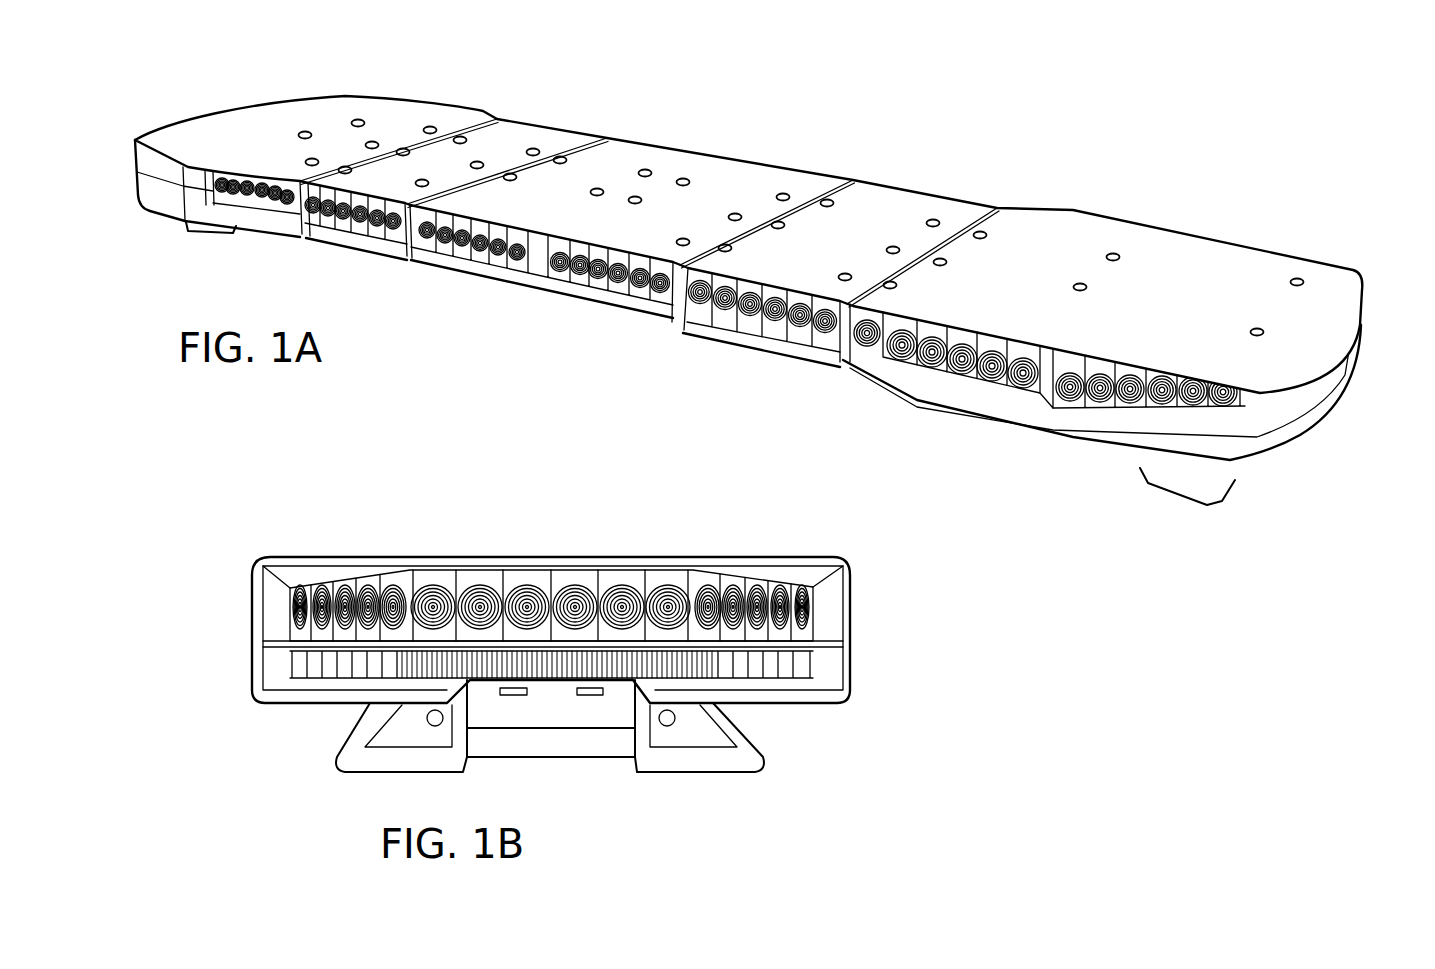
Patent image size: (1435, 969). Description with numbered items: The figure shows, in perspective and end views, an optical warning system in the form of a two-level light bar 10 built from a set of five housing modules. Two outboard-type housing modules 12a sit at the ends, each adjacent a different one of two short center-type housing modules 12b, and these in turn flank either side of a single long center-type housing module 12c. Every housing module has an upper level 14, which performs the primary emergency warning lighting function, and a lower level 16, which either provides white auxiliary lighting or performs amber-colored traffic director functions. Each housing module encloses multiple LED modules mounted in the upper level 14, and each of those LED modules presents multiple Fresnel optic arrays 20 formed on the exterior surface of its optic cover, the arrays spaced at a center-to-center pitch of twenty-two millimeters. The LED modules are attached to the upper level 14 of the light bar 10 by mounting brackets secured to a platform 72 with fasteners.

In FIG. 1A, the two-level light bar 10 is at (769, 268).
In FIG. 1B, the two-level light bar 10 is at (491, 617).
In FIG. 1A, the outboard-type housing module 12a is at (380, 108).
In FIG. 1B, the outboard-type housing module 12a is at (633, 556).
In FIG. 1A, the short center-type housing module 12b is at (507, 136).
In FIG. 1A, the long center-type housing module 12c is at (677, 168).
In FIG. 1A, the upper level 14 is at (1345, 242).
In FIG. 1B, the upper level 14 is at (247, 602).
In FIG. 1A, the lower level 16 is at (900, 412).
In FIG. 1B, the lower level 16 is at (268, 707).
In FIG. 1A, the Fresnel optic array 20 is at (273, 202).
In FIG. 1B, the Fresnel optic array 20 is at (393, 583).
In FIG. 1A, the platform 72 is at (1040, 403).